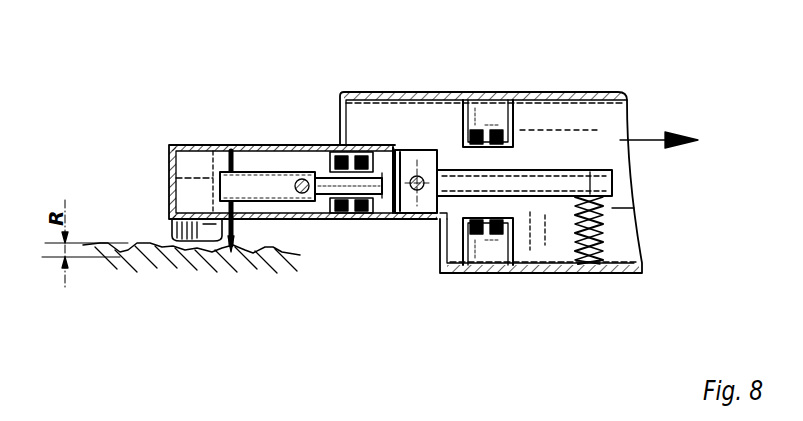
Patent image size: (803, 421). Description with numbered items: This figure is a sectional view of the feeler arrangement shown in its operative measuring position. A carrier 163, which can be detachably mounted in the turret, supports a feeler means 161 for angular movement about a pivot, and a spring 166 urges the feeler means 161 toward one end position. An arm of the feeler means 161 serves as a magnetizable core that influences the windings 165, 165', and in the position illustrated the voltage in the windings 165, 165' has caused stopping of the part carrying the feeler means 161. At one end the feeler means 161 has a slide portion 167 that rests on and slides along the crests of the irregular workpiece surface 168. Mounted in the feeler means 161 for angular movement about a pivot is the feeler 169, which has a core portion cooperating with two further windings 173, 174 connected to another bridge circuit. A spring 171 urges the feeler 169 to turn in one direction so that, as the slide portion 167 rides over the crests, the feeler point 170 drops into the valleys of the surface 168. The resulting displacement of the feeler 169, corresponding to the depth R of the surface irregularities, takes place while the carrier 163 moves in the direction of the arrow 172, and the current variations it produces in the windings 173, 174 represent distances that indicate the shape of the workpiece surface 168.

The feeler means 161 is at (421, 152).
The carrier 163 is at (590, 91).
The winding 165 is at (520, 77).
The winding 165' is at (482, 292).
The spring 166 is at (578, 262).
The slide portion 167 is at (198, 229).
The workpiece surface 168 is at (292, 258).
The feeler 169 is at (290, 172).
The feeler point 170 is at (232, 249).
The spring 171 is at (231, 150).
The arrow 172 is at (668, 137).
The winding 173 is at (351, 152).
The winding 174 is at (353, 216).